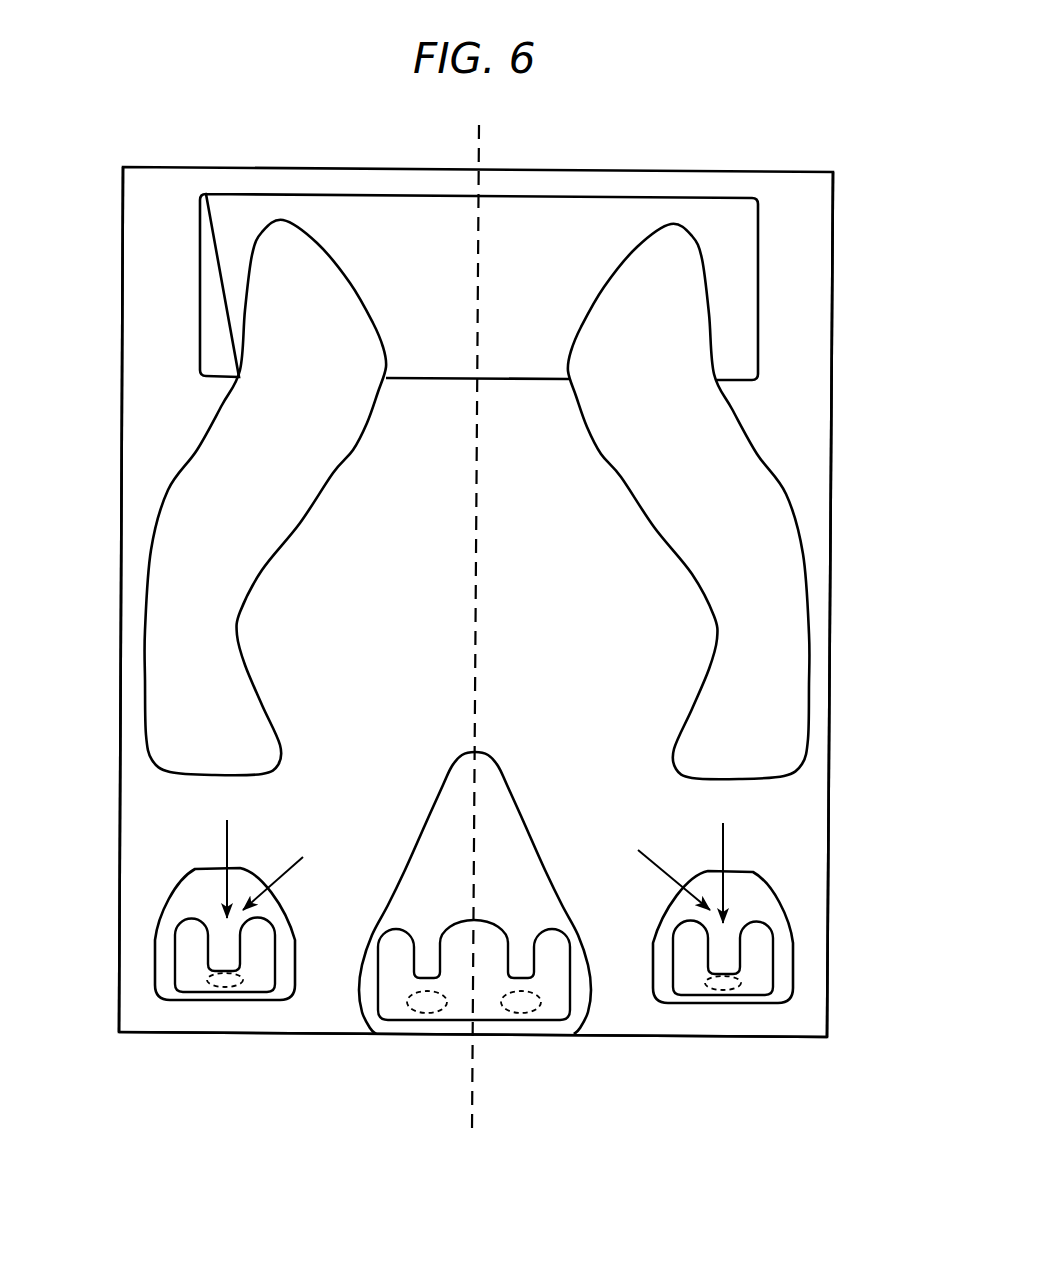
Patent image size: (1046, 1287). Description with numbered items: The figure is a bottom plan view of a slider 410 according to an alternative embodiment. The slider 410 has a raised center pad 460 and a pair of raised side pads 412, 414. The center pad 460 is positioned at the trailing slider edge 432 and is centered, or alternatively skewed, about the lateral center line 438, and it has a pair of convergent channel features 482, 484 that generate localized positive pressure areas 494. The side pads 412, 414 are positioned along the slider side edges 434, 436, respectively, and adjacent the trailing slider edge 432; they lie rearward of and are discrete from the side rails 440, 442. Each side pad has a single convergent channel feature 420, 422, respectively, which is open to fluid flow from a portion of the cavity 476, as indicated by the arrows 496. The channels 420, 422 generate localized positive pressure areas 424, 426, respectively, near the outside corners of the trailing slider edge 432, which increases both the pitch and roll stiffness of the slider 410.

The slider 410 is at (712, 102).
The raised side pad 412 is at (262, 866).
The raised side pad 414 is at (675, 826).
The convergent channel feature 420 is at (202, 945).
The convergent channel feature 422 is at (732, 917).
The localized positive pressure area 424 is at (210, 987).
The localized positive pressure area 426 is at (727, 990).
The trailing slider edge 432 is at (683, 1038).
The slider side edge 434 is at (121, 502).
The slider side edge 436 is at (833, 473).
The lateral center line 438 is at (472, 1092).
The side rail 440 is at (192, 679).
The side rail 442 is at (772, 660).
The raised center pad 460 is at (525, 782).
The cavity 476 is at (443, 533).
The convergent channel feature 482 is at (403, 968).
The convergent channel feature 484 is at (543, 967).
The localized positive pressure areas 494 is at (427, 1005).
The arrows 496 is at (228, 848).